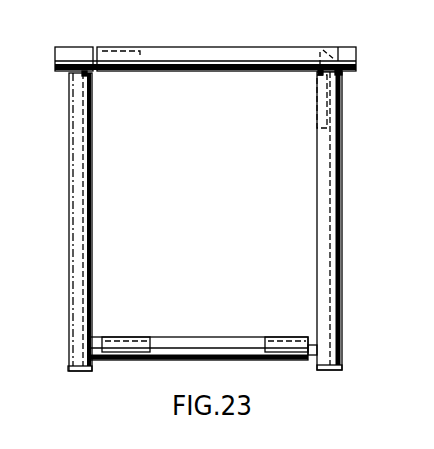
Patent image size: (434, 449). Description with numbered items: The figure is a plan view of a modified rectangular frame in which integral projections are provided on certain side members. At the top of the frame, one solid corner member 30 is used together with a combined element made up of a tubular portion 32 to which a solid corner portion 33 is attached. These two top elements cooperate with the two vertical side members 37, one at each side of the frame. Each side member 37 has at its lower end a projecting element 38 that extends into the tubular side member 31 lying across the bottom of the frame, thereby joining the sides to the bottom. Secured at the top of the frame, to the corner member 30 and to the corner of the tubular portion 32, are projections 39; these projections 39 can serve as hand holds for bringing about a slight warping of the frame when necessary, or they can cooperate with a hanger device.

The corner member 30 is at (92, 74).
The side member 31 is at (210, 341).
The tubular portion 32 is at (243, 52).
The corner portion 33 is at (318, 90).
The side members 37 is at (86, 231).
The projecting element 38 is at (129, 339).
The projections 39 is at (76, 57).